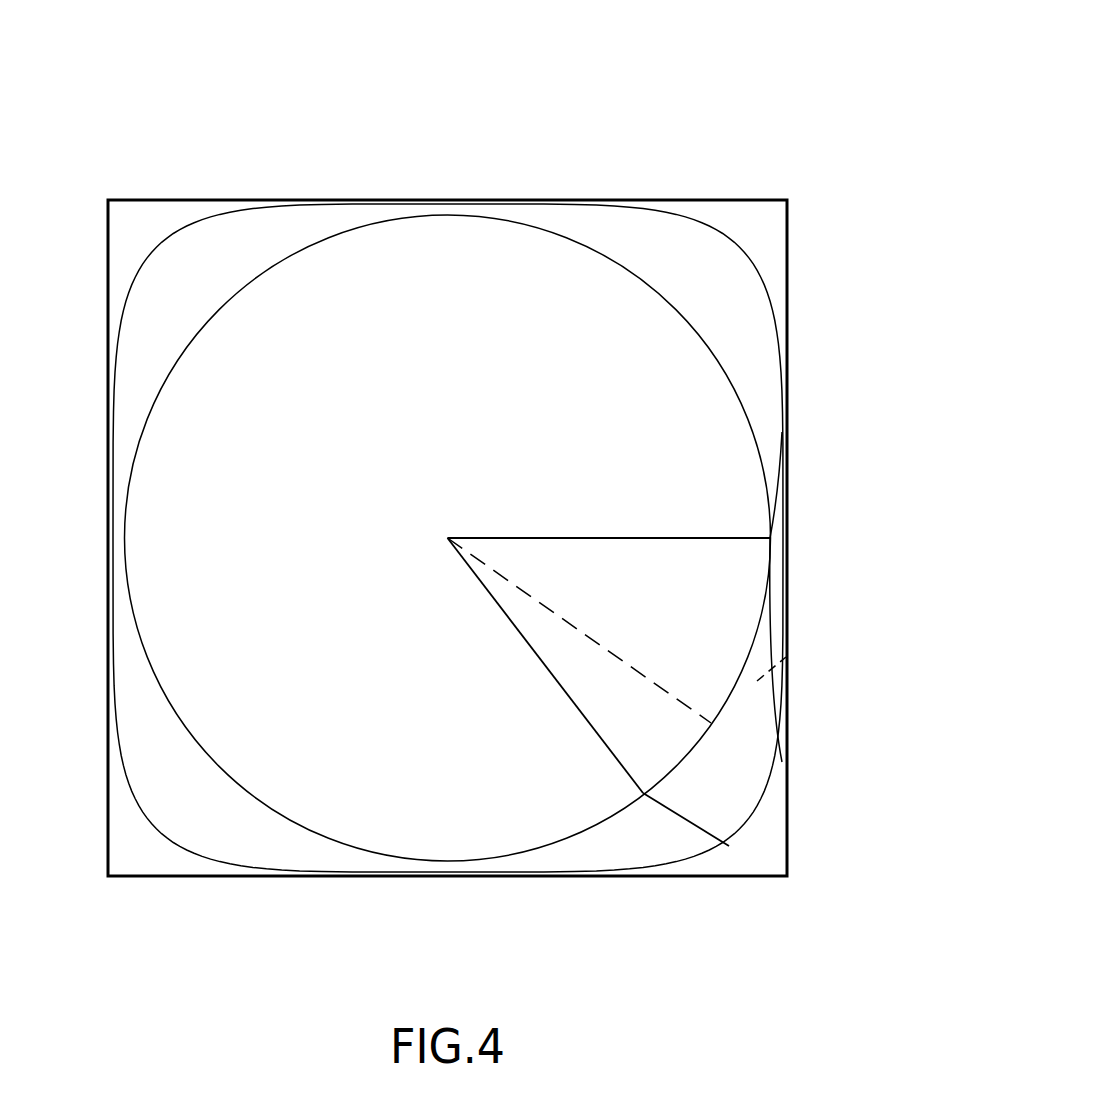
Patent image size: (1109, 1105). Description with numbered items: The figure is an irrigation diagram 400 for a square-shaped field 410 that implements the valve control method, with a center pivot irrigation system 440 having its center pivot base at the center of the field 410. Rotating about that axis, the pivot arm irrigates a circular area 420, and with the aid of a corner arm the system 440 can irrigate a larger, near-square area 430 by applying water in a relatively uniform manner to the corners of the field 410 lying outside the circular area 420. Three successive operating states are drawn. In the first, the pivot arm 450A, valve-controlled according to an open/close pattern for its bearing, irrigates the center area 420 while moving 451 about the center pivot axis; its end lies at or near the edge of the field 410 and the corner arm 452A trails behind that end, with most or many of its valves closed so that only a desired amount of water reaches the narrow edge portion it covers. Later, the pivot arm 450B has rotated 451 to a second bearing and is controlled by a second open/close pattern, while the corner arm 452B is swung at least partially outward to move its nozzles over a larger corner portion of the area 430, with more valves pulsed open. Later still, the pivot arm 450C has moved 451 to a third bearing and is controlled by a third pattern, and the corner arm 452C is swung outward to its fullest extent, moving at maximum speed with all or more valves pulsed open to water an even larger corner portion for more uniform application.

The irrigation diagram 400 is at (674, 80).
The field 410 is at (735, 199).
The circular area 420 is at (280, 262).
The near-square area 430 is at (190, 220).
The center pivot irrigation system 440 is at (406, 574).
The pivot arm 450A is at (613, 524).
The pivot arm 450B is at (645, 660).
The pivot arm 450C is at (583, 746).
The moving/rotating of the pivot arm 451 is at (743, 545).
The corner arm 452A is at (772, 490).
The corner arm 452B is at (786, 694).
The corner arm 452C is at (702, 848).